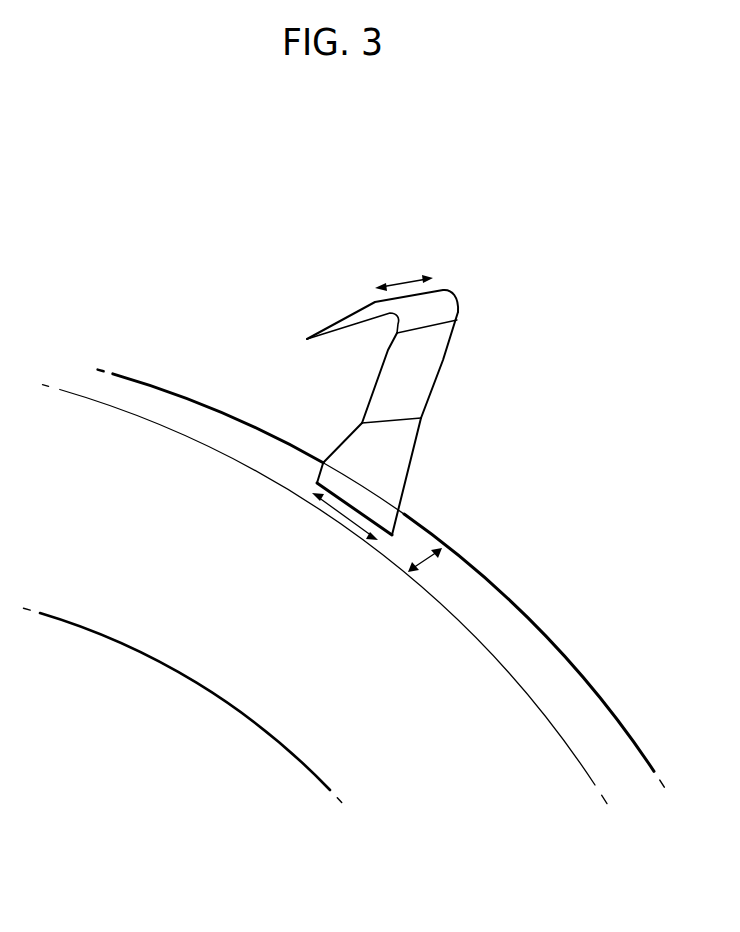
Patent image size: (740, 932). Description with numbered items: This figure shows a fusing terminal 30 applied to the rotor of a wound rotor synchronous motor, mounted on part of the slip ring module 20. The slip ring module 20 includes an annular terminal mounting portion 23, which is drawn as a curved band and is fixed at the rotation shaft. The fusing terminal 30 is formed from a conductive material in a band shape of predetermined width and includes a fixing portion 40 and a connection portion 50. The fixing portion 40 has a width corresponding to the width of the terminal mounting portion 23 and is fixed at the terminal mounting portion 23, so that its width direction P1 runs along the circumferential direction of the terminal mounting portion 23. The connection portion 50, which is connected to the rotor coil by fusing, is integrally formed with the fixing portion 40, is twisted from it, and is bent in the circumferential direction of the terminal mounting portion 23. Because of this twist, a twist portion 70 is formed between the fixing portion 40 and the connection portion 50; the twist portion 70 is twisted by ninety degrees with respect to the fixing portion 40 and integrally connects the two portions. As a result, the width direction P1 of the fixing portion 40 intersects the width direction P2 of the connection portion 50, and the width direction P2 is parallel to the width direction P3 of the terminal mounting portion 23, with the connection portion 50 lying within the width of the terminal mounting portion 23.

The slip ring module 20 is at (548, 628).
The terminal mounting portion 23 is at (203, 423).
The fusing terminal 30 is at (425, 401).
The fixing portion 40 is at (367, 503).
The connection portion 50 is at (447, 300).
The twist portion 70 is at (392, 448).
The width direction of the fixing portion P1 is at (345, 518).
The width direction of the connection portion P2 is at (404, 273).
The width direction of the terminal mounting portion P3 is at (429, 568).